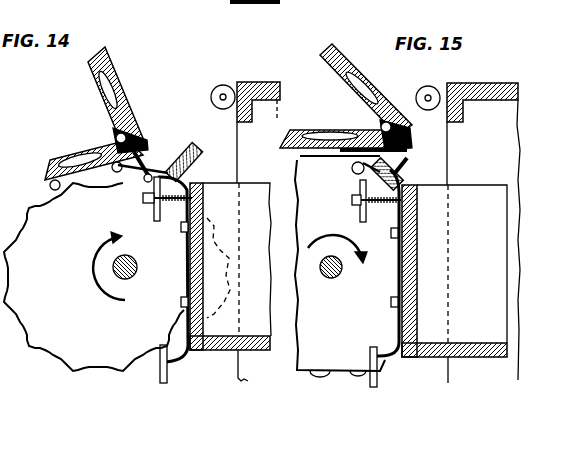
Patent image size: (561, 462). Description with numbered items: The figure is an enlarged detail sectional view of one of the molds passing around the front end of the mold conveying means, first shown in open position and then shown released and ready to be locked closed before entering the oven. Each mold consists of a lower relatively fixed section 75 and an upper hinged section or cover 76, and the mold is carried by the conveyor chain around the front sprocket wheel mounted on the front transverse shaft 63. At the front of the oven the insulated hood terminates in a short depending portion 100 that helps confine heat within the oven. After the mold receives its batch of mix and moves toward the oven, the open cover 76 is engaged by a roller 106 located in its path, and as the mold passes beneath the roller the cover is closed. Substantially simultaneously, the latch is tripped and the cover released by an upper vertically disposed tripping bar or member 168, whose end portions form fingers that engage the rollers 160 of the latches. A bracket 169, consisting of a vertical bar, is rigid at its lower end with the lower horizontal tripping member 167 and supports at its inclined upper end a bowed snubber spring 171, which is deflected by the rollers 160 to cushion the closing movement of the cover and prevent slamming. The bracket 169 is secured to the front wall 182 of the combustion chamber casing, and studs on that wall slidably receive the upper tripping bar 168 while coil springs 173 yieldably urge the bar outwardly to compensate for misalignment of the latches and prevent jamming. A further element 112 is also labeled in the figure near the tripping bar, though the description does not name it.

In FIG. 14, the front transverse shaft 63 is at (117, 277).
In FIG. 15, the front transverse shaft 63 is at (335, 278).
In FIG. 14, the lower relatively fixed section 75 is at (80, 147).
In FIG. 15, the lower relatively fixed section 75 is at (343, 122).
In FIG. 14, the upper hinged section or cover 76 is at (122, 88).
In FIG. 15, the upper hinged section or cover 76 is at (377, 70).
In FIG. 14, the depending portion 100 is at (247, 82).
In FIG. 15, the depending portion 100 is at (460, 83).
In FIG. 14, the roller 106 is at (223, 85).
In FIG. 15, the roller 106 is at (435, 78).
In FIG. 14, the adjusting screw 112 is at (143, 199).
In FIG. 15, the adjusting screw 112 is at (354, 198).
In FIG. 15, the rollers of the latches 160 is at (527, 208).
In FIG. 14, the lower horizontal tripping plate or member 167 is at (162, 352).
In FIG. 15, the lower horizontal tripping plate or member 167 is at (371, 356).
In FIG. 14, the upper vertically disposed tripping bar or member 168 is at (148, 212).
In FIG. 15, the upper vertically disposed tripping bar or member 168 is at (365, 205).
In FIG. 14, the bracket 169 is at (184, 258).
In FIG. 15, the bracket 169 is at (385, 272).
In FIG. 14, the bowed snubber spring 171 is at (179, 150).
In FIG. 15, the bowed snubber spring 171 is at (398, 168).
In FIG. 14, the coil springs 173 is at (177, 215).
In FIG. 15, the coil springs 173 is at (406, 222).
In FIG. 14, the front wall 182 is at (206, 218).
In FIG. 15, the front wall 182 is at (417, 288).